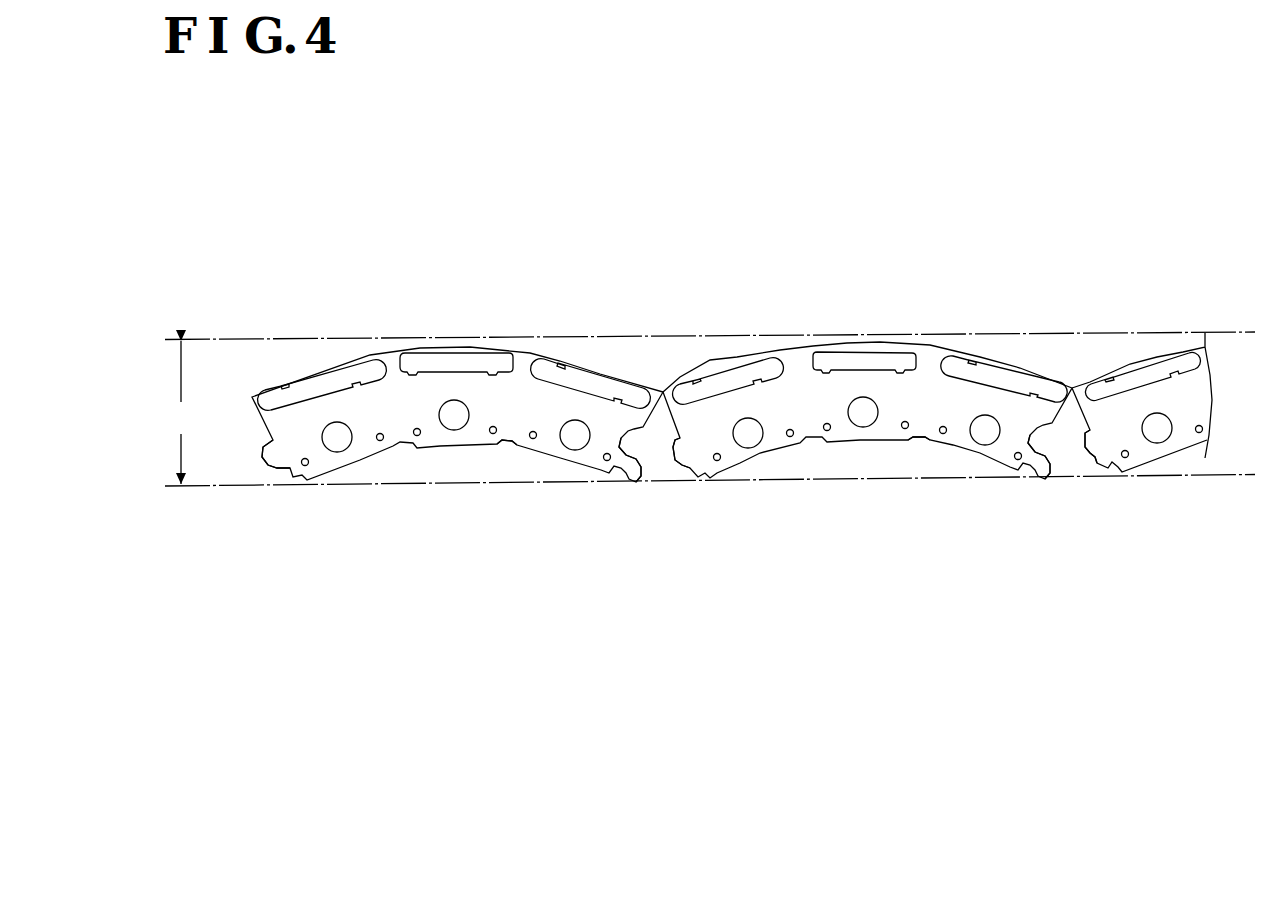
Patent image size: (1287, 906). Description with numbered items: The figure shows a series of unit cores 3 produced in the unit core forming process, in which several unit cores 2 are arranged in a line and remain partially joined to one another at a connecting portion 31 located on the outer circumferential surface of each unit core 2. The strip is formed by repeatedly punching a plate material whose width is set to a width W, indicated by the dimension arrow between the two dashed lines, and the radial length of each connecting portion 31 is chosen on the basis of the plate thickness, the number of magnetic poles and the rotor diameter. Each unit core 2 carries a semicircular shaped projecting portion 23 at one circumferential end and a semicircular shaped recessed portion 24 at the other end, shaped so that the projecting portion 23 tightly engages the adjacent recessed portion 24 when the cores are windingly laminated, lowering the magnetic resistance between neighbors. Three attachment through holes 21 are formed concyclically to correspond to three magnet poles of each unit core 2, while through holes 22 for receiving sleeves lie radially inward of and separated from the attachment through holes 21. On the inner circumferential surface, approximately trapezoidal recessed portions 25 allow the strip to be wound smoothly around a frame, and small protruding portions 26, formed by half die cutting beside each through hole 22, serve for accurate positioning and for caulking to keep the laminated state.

The unit core 2 is at (527, 350).
The series of unit cores 3 is at (504, 197).
The attachment through hole 21 is at (341, 372).
The through hole 22 is at (453, 420).
The semicircular shaped projecting portion 23 is at (258, 470).
The semicircular shaped recessed portion 24 is at (636, 483).
The recessed portion 25 is at (500, 443).
The protruding portion 26 is at (533, 438).
The connecting portion 31 is at (663, 387).
The width W is at (182, 412).